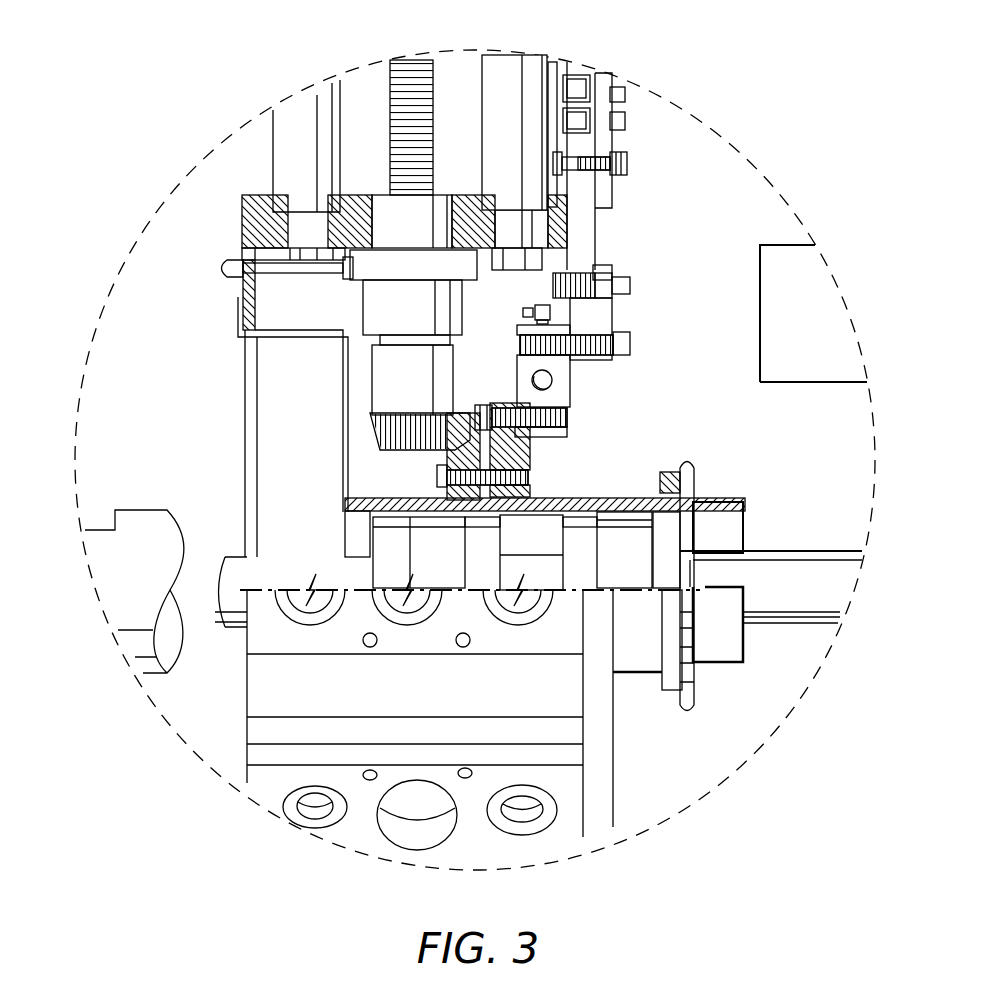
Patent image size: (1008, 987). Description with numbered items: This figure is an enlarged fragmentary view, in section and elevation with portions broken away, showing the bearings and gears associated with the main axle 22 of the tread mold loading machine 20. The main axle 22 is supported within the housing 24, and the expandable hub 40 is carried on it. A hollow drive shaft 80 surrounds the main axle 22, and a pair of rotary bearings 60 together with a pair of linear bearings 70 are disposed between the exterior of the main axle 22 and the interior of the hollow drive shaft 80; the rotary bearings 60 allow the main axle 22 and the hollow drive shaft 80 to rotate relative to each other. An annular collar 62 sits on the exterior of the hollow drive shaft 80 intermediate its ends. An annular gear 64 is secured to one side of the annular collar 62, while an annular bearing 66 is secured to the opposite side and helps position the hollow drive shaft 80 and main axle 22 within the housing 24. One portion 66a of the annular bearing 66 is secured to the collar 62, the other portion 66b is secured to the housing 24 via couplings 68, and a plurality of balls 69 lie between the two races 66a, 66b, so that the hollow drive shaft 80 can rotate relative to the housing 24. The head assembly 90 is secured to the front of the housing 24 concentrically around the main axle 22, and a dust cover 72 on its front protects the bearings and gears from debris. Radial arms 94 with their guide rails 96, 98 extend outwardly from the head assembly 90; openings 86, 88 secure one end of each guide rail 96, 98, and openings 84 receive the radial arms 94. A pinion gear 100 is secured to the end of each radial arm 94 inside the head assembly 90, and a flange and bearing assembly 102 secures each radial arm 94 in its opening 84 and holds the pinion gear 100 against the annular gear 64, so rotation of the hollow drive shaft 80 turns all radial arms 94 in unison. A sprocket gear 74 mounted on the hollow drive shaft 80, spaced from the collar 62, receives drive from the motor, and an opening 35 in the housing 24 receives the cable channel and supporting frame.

The tread mold loading machine 20 is at (118, 350).
The main axle 22 is at (230, 555).
The housing 24 is at (612, 196).
The opening 35 is at (760, 300).
The expandable hub 40 is at (143, 522).
The rotary bearings 60 is at (449, 571).
The annular collar 62 is at (532, 462).
The annular gear 64 is at (440, 462).
The annular bearing 66 is at (577, 393).
The portion of annular bearing 66a is at (567, 435).
The portion of annular bearing 66b is at (570, 368).
The couplings 68 is at (603, 263).
The balls 69 is at (528, 371).
The linear bearings 70 is at (383, 542).
The dust cover 72 is at (340, 370).
The sprocket gear 74 is at (695, 677).
The hollow drive shaft 80 is at (652, 470).
The openings 84 is at (382, 203).
The opening 86 is at (297, 218).
The opening 88 is at (517, 813).
The head assembly 90 is at (228, 288).
The radial arms 94 is at (390, 87).
The guide rail 96 is at (298, 110).
The guide rail 98 is at (510, 70).
The pinion gears 100 is at (412, 423).
The flange and bearing assembly 102 is at (363, 308).